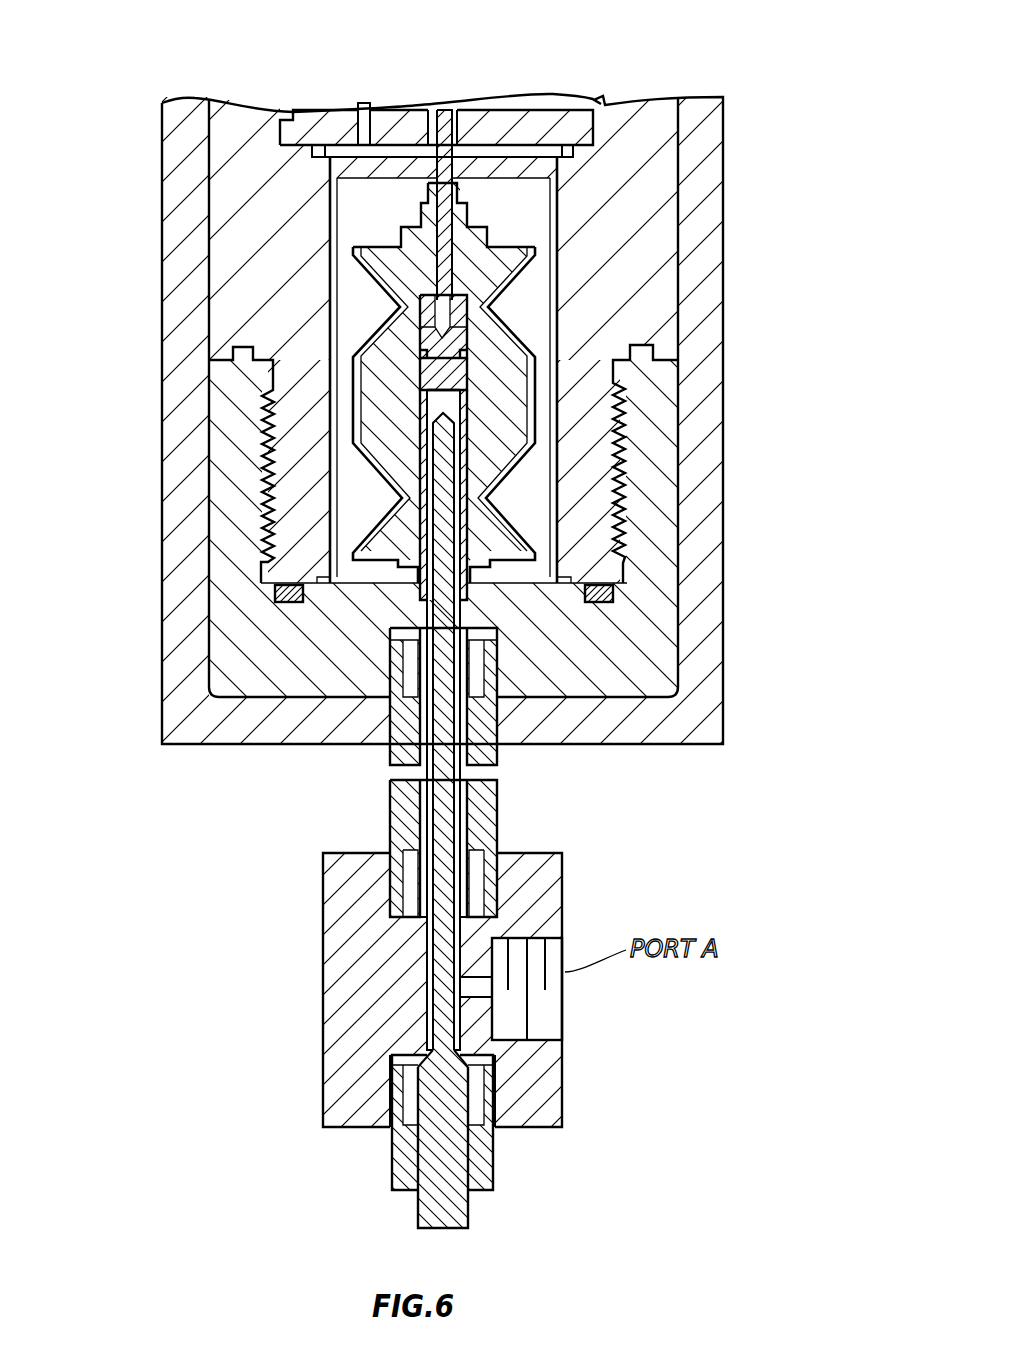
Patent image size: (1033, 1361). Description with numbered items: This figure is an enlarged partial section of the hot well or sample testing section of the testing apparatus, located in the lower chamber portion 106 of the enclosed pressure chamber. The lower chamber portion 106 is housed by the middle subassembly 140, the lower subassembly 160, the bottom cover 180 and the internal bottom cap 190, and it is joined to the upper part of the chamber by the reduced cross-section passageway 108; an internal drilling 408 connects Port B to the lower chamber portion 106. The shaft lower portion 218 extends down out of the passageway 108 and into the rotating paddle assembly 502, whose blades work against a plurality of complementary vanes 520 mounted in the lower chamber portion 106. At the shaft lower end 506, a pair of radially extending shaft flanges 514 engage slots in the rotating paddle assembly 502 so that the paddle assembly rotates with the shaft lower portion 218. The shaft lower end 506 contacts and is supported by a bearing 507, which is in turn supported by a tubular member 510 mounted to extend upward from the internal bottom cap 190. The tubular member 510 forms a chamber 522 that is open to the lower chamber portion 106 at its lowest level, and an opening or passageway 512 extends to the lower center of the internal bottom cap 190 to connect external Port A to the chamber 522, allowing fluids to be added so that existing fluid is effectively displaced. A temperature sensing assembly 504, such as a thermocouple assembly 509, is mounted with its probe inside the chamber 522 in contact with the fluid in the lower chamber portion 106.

The lower chamber portion 106 is at (368, 215).
The passageway 108 is at (457, 133).
The middle subassembly 140 is at (523, 117).
The lower subassembly 160 is at (643, 127).
The bottom cover 180 is at (703, 180).
The internal bottom cap 190 is at (652, 417).
The shaft lower portion 218 is at (442, 110).
The internal drilling 408 is at (363, 124).
The rotating paddle assembly 502 is at (370, 410).
The temperature sensing assembly 504 is at (468, 1215).
The shaft lower end 506 is at (484, 307).
The bearing 507 is at (455, 345).
The thermocouple assembly 509 is at (445, 420).
The tubular member 510 is at (452, 375).
The passageway 512 is at (458, 612).
The shaft flanges 514 is at (470, 205).
The complementary vanes 520 is at (347, 293).
The chamber 522 is at (470, 495).